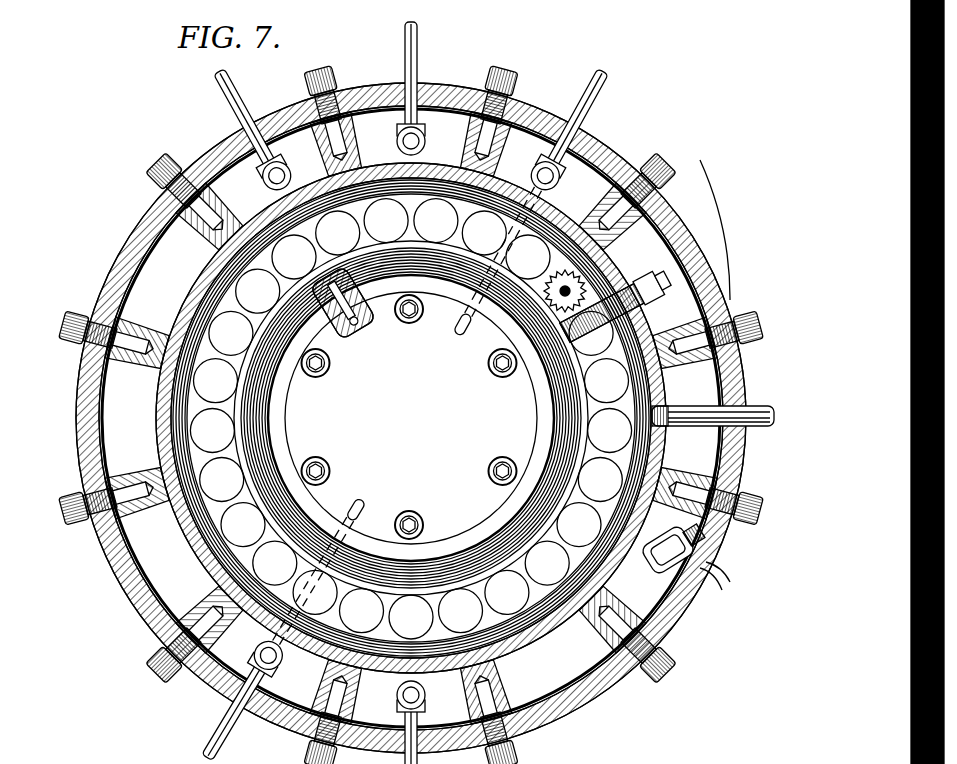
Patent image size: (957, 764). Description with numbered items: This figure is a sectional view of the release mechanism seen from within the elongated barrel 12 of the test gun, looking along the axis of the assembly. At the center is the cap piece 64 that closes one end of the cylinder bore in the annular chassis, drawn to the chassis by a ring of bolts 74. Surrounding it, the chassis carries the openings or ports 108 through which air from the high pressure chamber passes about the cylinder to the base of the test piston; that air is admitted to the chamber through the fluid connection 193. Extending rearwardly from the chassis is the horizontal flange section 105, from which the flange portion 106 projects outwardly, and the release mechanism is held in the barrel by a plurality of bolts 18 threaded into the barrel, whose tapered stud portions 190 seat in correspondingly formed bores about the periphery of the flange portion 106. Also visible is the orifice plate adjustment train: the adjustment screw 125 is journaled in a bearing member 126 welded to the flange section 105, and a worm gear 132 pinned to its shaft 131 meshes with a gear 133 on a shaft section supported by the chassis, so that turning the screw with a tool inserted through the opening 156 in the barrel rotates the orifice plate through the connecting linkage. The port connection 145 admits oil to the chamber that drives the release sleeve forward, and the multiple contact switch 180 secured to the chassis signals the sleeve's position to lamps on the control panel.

The barrel 12 is at (122, 251).
The bolts 18 is at (92, 333).
The cap piece 64 is at (446, 433).
The bolts 74 is at (424, 525).
The horizontal flange section 105 is at (543, 640).
The flange portion 106 is at (165, 216).
The openings or ports 108 is at (448, 626).
The adjustment screw 125 is at (625, 298).
The bearing member 126 is at (612, 287).
The shaft 131 is at (656, 380).
The worm gear 132 is at (584, 350).
The gear 133 is at (550, 291).
The port connection 145 is at (603, 86).
The opening 156 is at (702, 270).
The multiple contact switch 180 is at (722, 564).
The tapered stud portions 190 is at (122, 330).
The fluid connection 193 is at (752, 406).